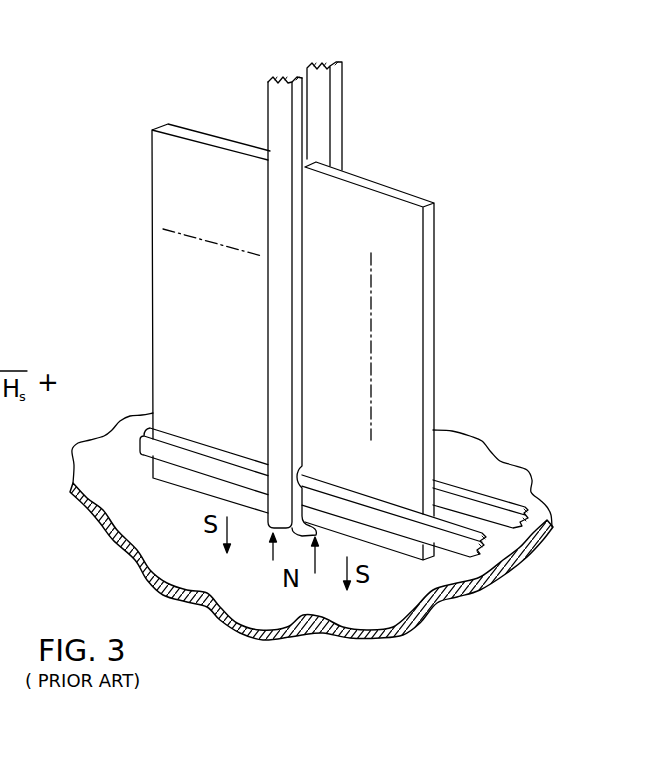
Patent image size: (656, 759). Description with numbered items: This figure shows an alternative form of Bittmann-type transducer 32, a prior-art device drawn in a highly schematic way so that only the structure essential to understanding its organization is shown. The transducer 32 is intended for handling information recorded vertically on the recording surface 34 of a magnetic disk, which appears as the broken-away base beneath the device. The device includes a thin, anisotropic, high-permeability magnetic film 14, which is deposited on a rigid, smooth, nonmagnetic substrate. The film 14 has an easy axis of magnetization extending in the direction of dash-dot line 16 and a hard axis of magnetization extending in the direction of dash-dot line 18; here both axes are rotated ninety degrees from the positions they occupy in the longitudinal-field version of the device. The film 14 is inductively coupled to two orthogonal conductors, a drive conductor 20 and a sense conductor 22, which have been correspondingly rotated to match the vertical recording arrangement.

The magnetic film 14 is at (432, 315).
The easy axis of magnetization 16 is at (370, 333).
The hard axis of magnetization 18 is at (182, 238).
The drive conductor 20 is at (320, 113).
The sense conductor 22 is at (457, 490).
The transducer 32 is at (452, 197).
The recording surface 34 is at (457, 570).